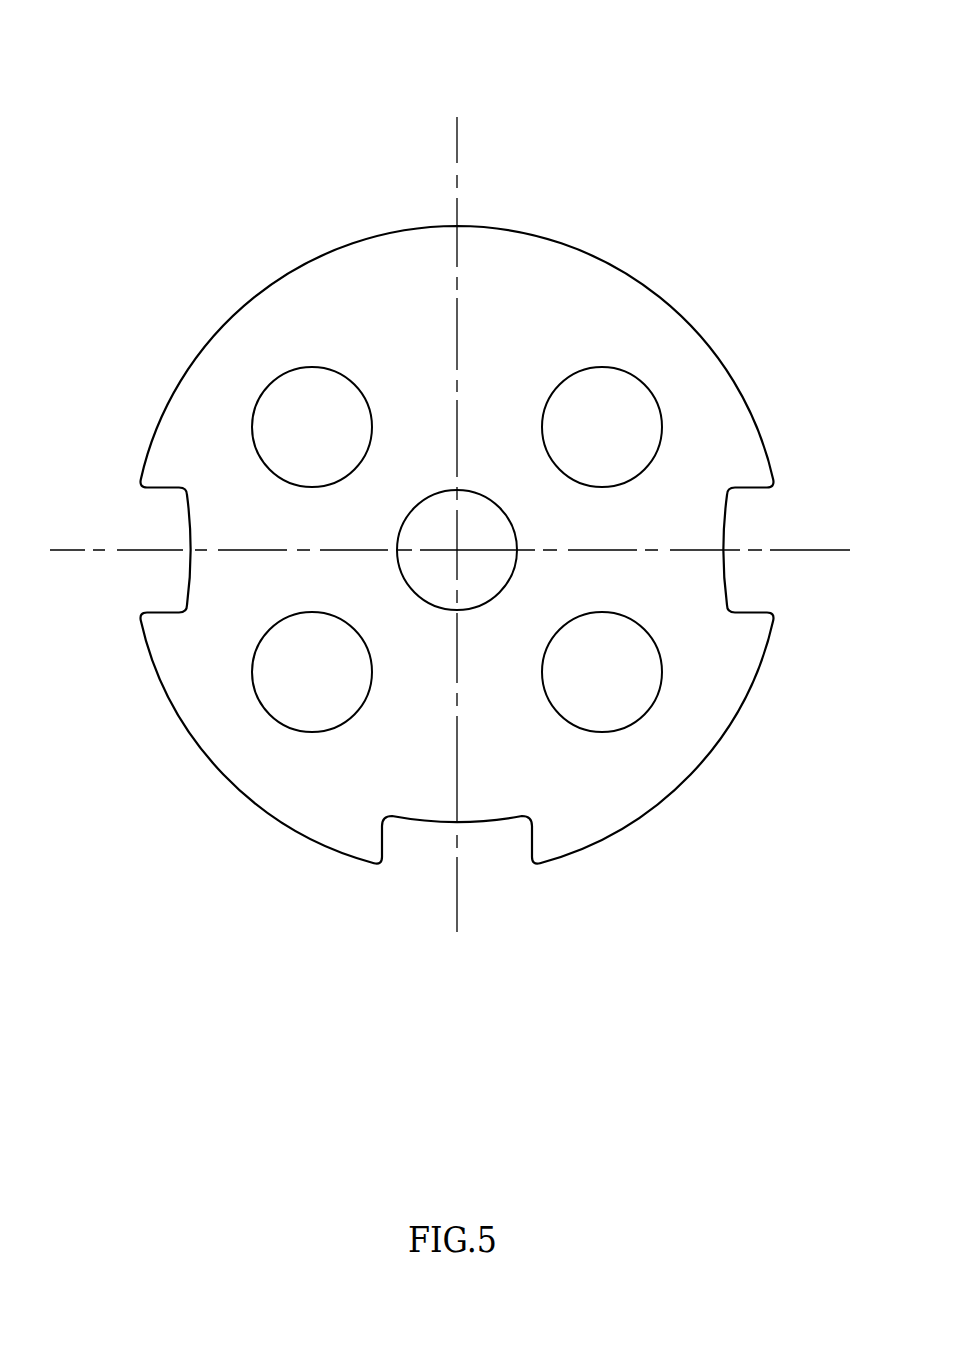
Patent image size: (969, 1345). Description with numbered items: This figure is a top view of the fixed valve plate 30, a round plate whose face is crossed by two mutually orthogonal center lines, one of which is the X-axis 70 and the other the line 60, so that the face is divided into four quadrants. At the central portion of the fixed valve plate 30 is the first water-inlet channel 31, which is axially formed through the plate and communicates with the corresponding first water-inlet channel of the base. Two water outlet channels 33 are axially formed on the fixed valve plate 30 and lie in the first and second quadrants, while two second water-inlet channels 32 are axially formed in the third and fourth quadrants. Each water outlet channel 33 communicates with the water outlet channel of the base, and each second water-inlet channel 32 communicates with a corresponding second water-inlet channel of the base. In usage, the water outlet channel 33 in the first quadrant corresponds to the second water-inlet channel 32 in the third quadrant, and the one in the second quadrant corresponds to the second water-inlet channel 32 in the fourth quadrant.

The fixed valve plate 30 is at (233, 815).
The first water-inlet channel 31 is at (490, 525).
The second water-inlet channel 32 is at (293, 688).
The water outlet channel 33 is at (323, 408).
The horizontal center axis 60 is at (818, 551).
The X-axis 70 is at (455, 153).